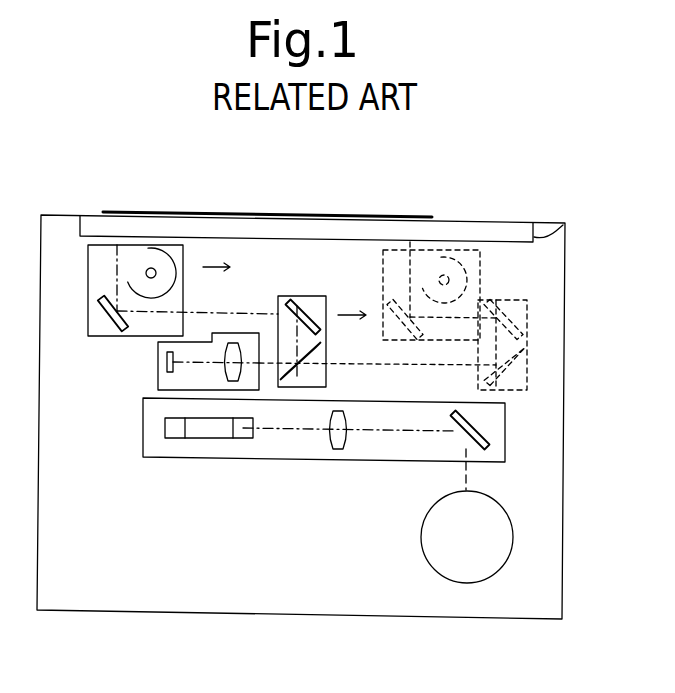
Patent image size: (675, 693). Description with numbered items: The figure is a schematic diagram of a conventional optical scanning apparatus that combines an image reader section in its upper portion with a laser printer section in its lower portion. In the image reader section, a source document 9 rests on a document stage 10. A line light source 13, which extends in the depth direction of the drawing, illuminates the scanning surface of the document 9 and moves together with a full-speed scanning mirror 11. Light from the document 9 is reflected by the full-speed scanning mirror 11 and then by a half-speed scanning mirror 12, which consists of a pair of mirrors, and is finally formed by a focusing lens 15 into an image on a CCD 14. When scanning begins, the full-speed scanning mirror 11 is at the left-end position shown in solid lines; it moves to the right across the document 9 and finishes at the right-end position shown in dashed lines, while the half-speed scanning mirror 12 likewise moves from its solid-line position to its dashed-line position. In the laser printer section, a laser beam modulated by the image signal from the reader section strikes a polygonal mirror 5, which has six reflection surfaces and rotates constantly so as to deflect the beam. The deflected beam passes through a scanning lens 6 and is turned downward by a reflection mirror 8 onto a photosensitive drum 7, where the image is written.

The polygonal mirror 5 is at (205, 443).
The scanning lens 6 is at (325, 448).
The photosensitive drum 7 is at (418, 525).
The reflection mirror 8 is at (475, 422).
The source document 9 is at (388, 217).
The document stage 10 is at (565, 223).
The full-speed scanning mirror 11 is at (110, 328).
The half-speed scanning mirror 12 is at (300, 300).
The line light source 13 is at (173, 253).
The CCD 14 is at (158, 367).
The focusing lens 15 is at (237, 335).